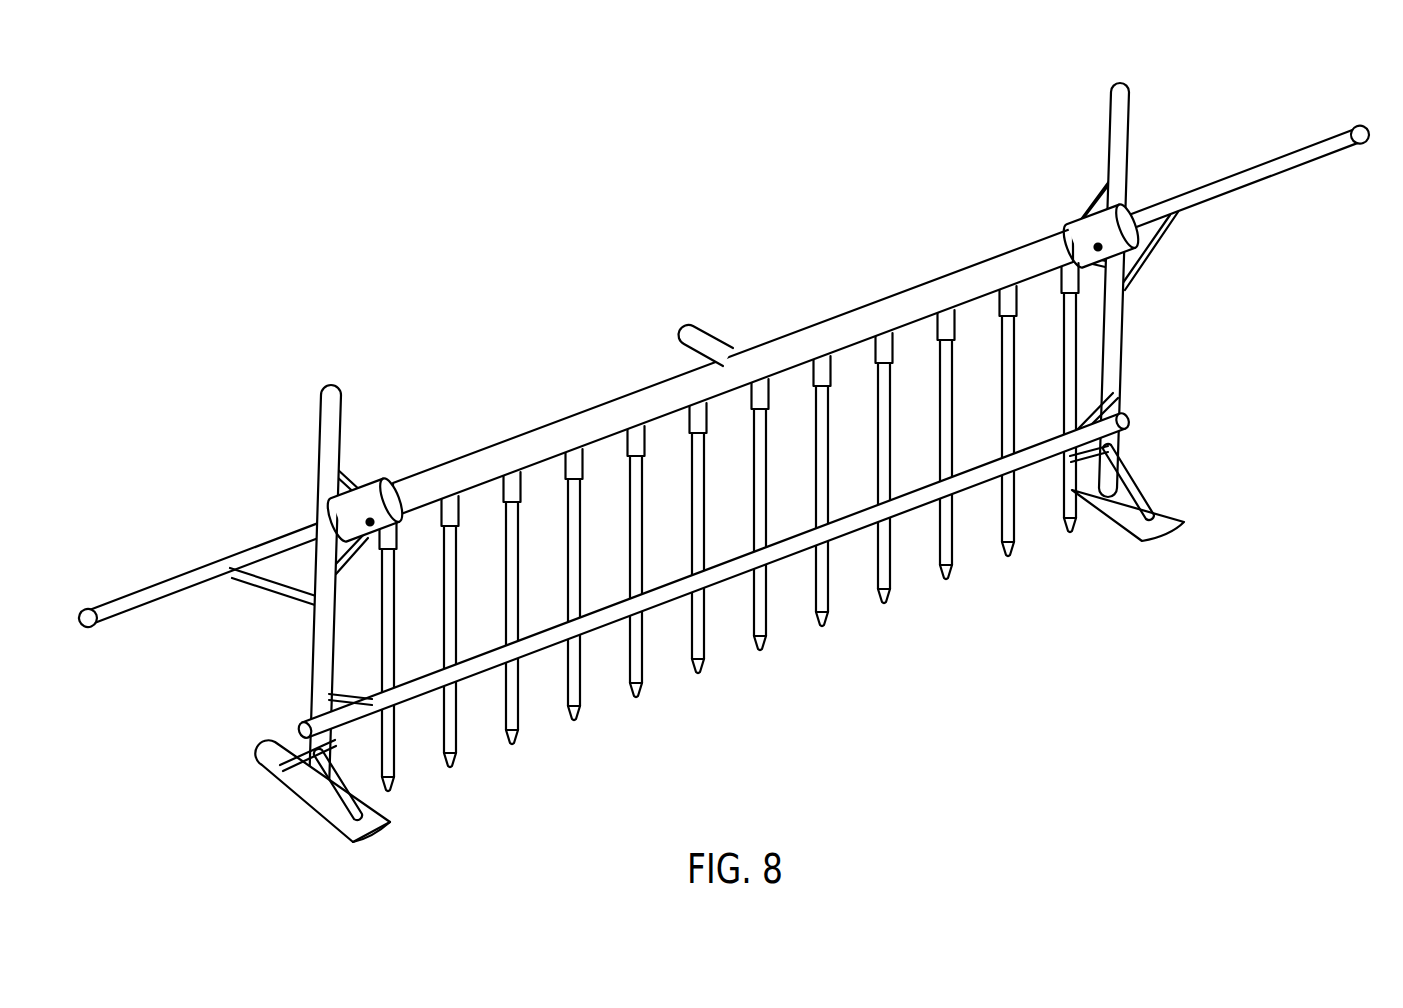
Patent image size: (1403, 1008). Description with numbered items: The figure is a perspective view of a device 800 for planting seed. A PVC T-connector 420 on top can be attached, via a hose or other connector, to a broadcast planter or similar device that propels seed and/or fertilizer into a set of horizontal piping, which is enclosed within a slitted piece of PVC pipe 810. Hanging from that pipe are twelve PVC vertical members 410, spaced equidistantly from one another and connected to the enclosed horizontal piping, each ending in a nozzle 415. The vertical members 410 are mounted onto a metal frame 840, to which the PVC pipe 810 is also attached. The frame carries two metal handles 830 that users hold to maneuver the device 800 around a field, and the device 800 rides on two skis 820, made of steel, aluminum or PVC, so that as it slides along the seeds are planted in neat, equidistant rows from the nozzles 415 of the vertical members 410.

The device for planting seed 800 is at (694, 117).
The PVC pipe 810 is at (556, 420).
The skis 820 is at (284, 797).
The metal handles 830 is at (214, 562).
The metal frame 840 is at (320, 438).
The vertical members 410 is at (516, 704).
The nozzle 415 is at (443, 775).
The PVC T-connector 420 is at (706, 334).